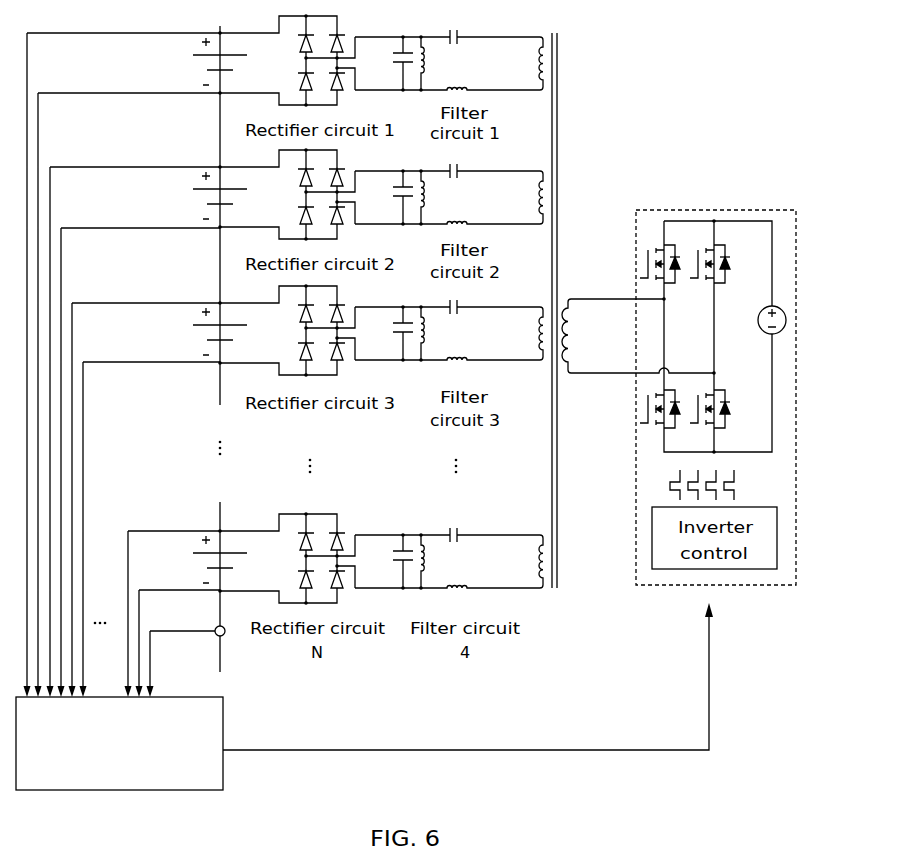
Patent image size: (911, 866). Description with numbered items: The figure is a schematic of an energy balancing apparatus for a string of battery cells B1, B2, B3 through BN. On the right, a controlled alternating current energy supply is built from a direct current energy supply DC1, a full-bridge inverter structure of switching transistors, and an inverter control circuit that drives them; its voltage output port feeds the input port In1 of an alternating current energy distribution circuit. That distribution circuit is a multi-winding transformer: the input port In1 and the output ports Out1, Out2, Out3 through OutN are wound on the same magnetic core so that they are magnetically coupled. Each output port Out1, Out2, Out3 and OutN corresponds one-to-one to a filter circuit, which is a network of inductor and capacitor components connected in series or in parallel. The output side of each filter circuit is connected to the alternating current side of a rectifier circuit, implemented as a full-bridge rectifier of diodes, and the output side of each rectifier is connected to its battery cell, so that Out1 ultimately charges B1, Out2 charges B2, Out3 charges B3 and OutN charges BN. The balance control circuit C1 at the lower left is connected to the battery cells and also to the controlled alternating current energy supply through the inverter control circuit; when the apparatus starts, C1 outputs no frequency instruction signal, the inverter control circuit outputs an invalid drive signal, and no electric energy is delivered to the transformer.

The battery cell B1 is at (201, 61).
The battery cell B2 is at (201, 195).
The battery cell B3 is at (201, 331).
The battery cell BN is at (198, 559).
The output port Out1 is at (511, 63).
The output port Out2 is at (511, 197).
The output port Out3 is at (511, 333).
The output port OutN is at (510, 561).
The input port In1 is at (638, 336).
The direct current energy supply DC1 is at (755, 338).
The balance control circuit C1 is at (364, 696).